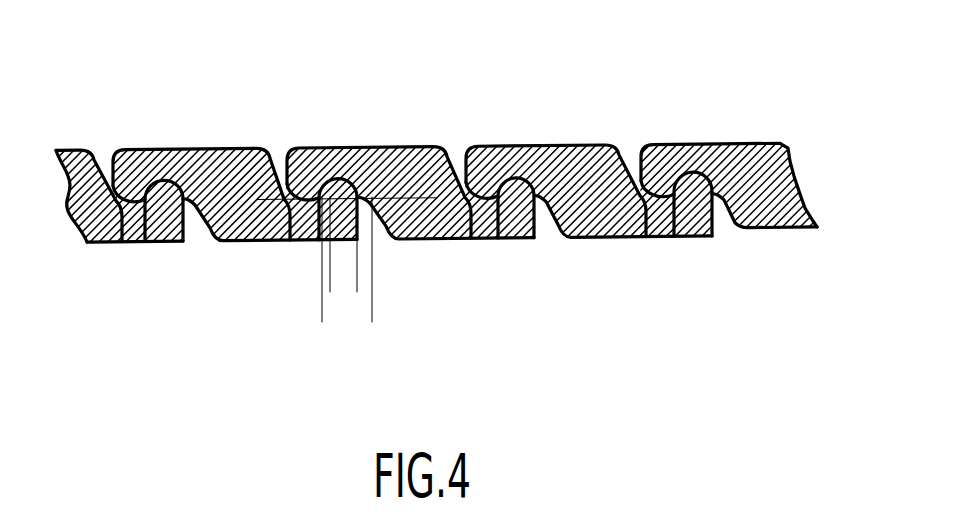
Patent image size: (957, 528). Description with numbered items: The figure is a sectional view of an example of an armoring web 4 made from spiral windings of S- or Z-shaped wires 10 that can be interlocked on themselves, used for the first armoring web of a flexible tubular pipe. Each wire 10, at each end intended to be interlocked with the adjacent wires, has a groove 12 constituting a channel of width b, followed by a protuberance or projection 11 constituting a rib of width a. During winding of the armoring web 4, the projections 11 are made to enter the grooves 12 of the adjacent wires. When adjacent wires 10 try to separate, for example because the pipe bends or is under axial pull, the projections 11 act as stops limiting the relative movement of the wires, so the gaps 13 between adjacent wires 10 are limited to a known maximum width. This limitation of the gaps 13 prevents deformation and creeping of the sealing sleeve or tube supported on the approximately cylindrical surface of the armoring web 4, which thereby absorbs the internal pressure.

The armoring web 4 is at (852, 128).
The wire 10 is at (203, 147).
The projection 11 is at (523, 150).
The groove 12 is at (496, 238).
The gap 13 is at (278, 152).
The width of the rib a is at (357, 265).
The width of the channel b is at (372, 310).